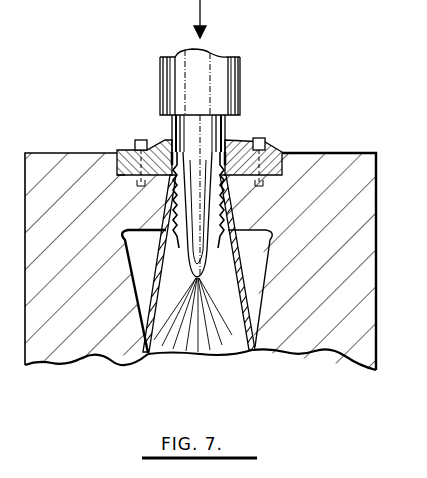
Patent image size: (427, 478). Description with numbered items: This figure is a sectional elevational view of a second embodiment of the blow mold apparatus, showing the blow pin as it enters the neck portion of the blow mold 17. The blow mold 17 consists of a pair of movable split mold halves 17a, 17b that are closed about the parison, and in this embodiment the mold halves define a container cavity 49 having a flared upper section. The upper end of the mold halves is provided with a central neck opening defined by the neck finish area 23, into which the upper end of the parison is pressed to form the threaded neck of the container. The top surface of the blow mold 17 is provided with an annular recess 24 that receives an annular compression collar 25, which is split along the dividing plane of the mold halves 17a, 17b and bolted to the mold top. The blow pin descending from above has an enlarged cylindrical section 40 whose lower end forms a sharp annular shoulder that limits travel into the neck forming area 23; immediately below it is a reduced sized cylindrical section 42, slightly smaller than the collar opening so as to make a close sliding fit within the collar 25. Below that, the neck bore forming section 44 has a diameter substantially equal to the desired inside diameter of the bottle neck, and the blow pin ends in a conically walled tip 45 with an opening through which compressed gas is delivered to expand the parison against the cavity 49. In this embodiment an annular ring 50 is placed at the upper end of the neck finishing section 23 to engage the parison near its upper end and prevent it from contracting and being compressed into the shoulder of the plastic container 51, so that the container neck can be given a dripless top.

The blow mold 17 is at (186, 371).
The mold half 17a is at (76, 350).
The mold half 17b is at (300, 340).
The neck finish area 23 is at (245, 192).
The annular recess 24 is at (128, 176).
The annular compression collar 25 is at (279, 133).
The enlarged cylindrical section 40 is at (203, 72).
The reduced sized cylindrical section 42 is at (190, 124).
The neck bore forming section 44 is at (185, 198).
The tip 45 is at (203, 268).
The container cavity 49 is at (258, 248).
The annular ring 50 is at (155, 172).
The plastic container 51 is at (240, 283).